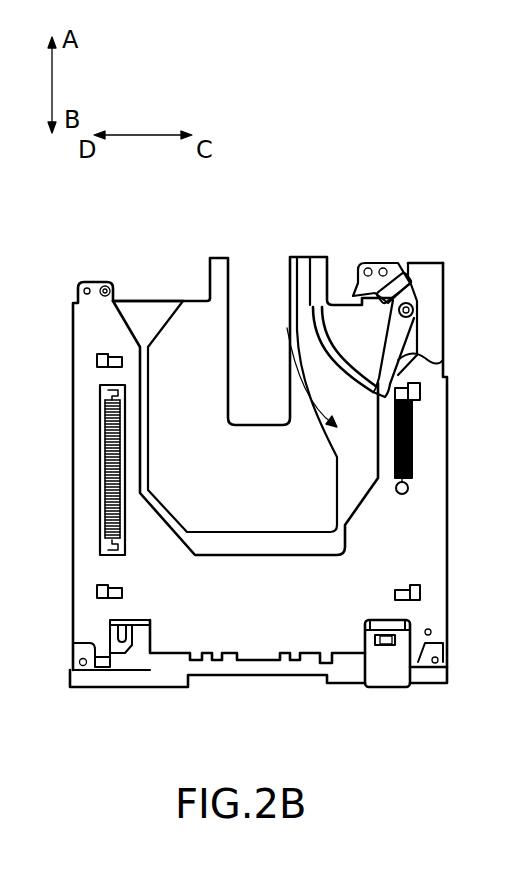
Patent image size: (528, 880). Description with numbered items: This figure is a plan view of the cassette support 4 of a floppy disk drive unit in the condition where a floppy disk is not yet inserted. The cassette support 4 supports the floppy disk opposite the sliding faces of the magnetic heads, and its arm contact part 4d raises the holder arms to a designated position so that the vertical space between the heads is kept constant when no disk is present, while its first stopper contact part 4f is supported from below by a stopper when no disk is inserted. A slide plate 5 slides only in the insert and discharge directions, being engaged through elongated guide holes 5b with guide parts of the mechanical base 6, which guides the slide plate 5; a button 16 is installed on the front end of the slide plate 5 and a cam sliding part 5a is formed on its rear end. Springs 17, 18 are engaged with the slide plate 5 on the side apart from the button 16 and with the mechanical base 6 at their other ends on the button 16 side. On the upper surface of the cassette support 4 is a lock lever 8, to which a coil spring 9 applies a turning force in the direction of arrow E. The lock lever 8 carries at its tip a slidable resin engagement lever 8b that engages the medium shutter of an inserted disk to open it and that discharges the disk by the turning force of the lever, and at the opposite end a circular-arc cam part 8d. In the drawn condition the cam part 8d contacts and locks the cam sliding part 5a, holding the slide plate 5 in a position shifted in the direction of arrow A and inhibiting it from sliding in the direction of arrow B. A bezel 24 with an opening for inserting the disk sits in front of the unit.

The cassette support 4 is at (252, 366).
The arm contact part 4d is at (274, 262).
The first stopper contact part 4f is at (318, 258).
The slide plate 5 is at (448, 282).
The cam sliding part 5a is at (416, 263).
The guide hole 5b is at (97, 362).
The mechanical base 6 is at (445, 540).
The lock lever 8 is at (424, 287).
The engagement lever 8b is at (405, 365).
The cam part 8d is at (387, 262).
The coil spring 9 is at (415, 290).
The button 16 is at (385, 678).
The spring 17 is at (100, 468).
The spring 18 is at (412, 445).
The bezel 24 is at (124, 678).